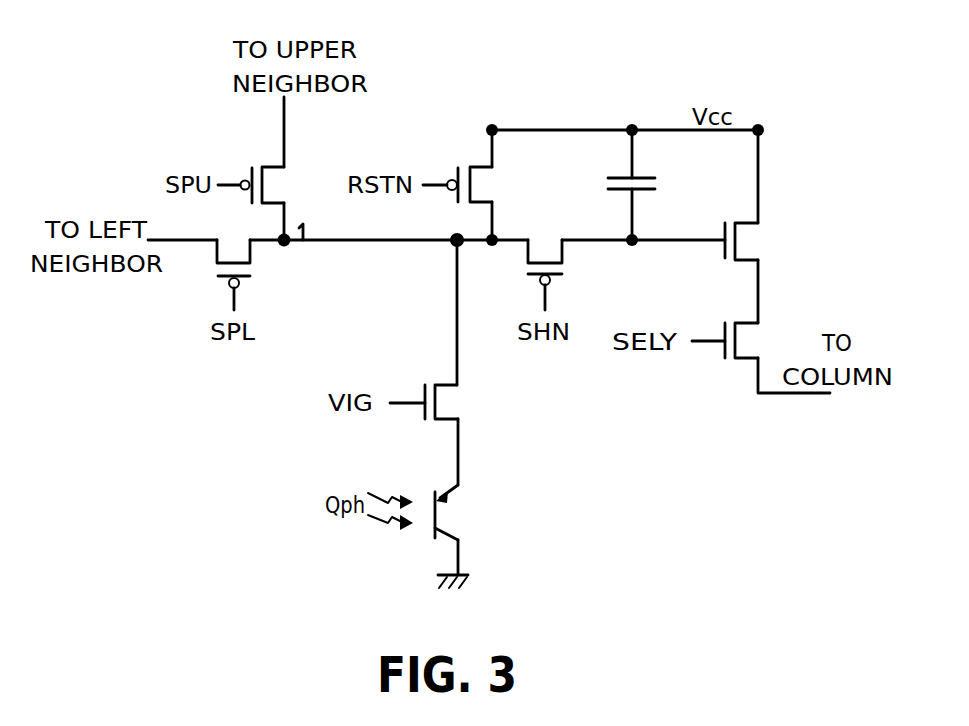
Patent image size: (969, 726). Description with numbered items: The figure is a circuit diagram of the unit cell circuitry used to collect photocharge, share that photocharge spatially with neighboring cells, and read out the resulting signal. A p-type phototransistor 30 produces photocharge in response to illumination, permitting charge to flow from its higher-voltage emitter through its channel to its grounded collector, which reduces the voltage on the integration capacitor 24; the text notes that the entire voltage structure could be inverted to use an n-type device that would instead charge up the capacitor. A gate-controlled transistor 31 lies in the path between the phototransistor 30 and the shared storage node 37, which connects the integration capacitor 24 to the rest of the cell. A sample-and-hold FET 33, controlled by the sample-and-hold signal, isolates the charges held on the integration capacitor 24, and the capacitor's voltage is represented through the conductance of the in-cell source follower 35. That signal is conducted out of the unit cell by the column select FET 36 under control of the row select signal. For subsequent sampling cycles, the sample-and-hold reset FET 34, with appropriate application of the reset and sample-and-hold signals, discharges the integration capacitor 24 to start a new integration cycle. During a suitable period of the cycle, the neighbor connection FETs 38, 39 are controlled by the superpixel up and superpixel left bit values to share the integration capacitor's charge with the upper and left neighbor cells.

The integration capacitor 24 is at (630, 177).
The phototransistor 30 is at (450, 520).
The transfer transistor (VIG) 31 is at (415, 382).
The sample-and-hold FET 33 is at (577, 265).
The sample-and-hold reset FET 34 is at (475, 183).
The source follower 35 is at (752, 243).
The column select FET 36 is at (728, 370).
The storage node 37 is at (315, 223).
The neighbor connection FET 38 is at (237, 168).
The neighbor connection FET 39 is at (210, 267).